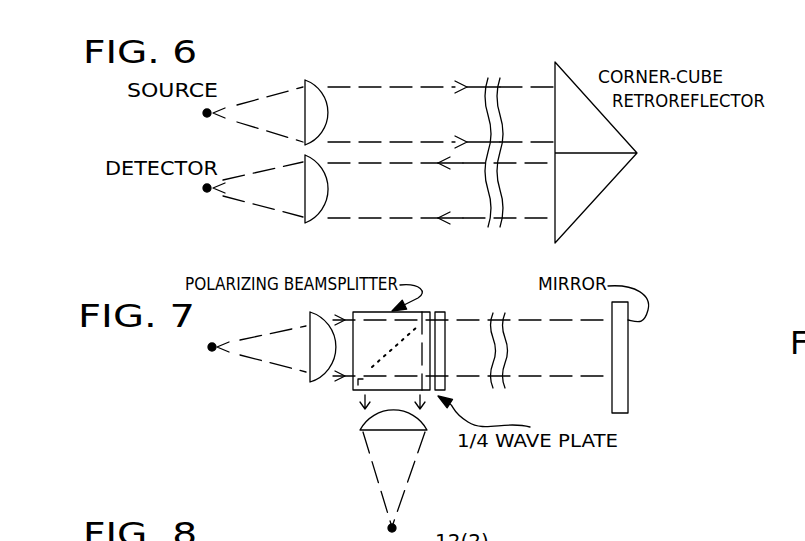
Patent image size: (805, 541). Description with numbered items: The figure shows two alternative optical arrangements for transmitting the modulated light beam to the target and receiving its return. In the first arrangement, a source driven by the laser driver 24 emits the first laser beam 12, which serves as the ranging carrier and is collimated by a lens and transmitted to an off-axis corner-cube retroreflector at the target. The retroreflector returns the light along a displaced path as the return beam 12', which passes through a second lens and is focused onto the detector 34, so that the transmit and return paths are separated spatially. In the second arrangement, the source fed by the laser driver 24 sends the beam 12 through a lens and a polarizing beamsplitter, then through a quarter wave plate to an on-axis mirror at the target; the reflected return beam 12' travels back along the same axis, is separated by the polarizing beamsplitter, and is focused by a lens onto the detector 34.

In FIG. 6, the first laser beam 12 is at (441, 95).
In FIG. 7, the first laser beam 12 is at (472, 338).
In FIG. 6, the return beam 12' is at (441, 207).
In FIG. 7, the return beam 12' is at (472, 376).
In FIG. 6, the laser driver 24 is at (227, 92).
In FIG. 7, the laser driver 24 is at (215, 357).
In FIG. 6, the detector 34 is at (192, 198).
In FIG. 7, the detector 34 is at (403, 522).